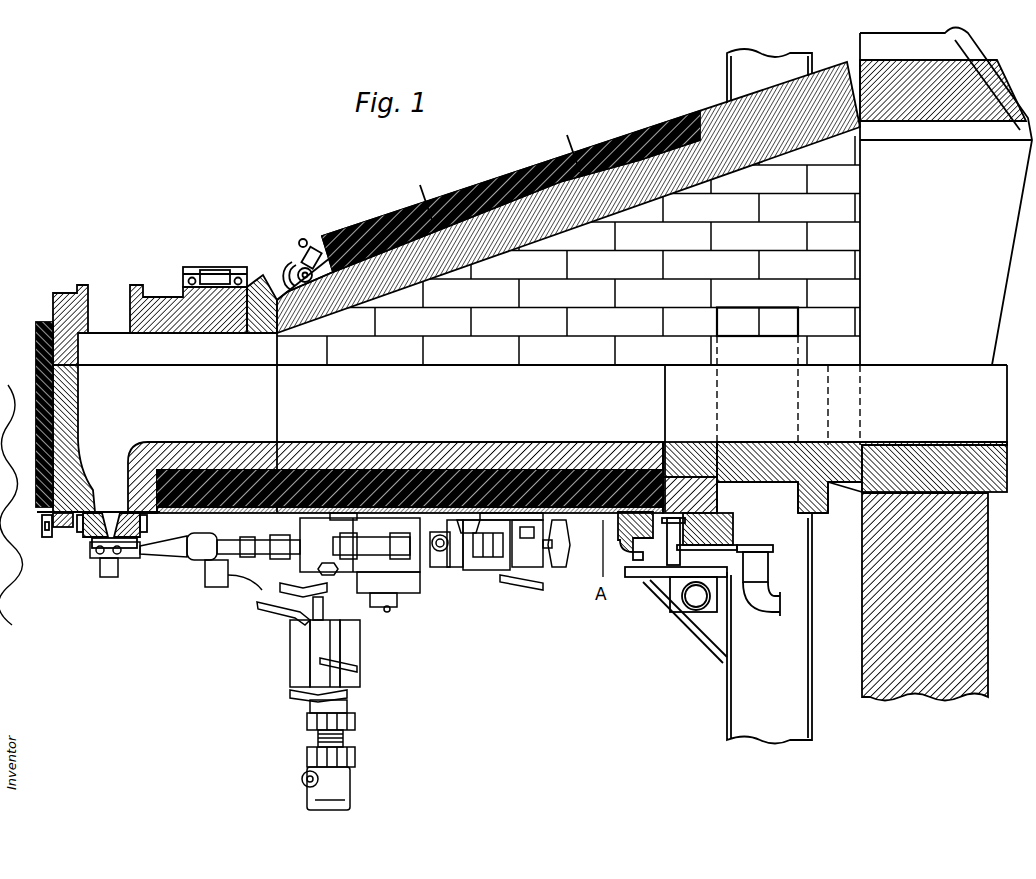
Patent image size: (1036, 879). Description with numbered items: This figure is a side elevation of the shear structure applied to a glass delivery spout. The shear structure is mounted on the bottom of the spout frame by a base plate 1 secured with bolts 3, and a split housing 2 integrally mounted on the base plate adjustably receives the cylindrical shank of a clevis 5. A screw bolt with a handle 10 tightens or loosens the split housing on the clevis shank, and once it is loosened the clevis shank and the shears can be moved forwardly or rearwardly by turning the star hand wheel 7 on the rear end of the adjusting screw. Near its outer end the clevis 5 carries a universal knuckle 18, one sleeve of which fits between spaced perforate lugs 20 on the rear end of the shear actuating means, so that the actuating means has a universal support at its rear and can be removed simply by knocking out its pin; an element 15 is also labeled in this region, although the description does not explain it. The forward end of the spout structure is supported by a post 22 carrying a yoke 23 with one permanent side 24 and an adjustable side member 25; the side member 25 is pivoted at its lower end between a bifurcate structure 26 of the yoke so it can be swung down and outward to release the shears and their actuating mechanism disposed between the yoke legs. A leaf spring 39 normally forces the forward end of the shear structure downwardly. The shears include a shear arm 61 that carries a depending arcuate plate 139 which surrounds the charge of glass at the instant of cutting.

The base plate 1 is at (540, 518).
The split housing 2 is at (536, 560).
The bolts 3 is at (522, 535).
The clevis 5 is at (462, 568).
The star hand wheel 7 is at (561, 556).
The handle 10 is at (517, 580).
The adjusting nut 15 is at (479, 560).
The universal knuckle 18 is at (455, 555).
The perforate lugs 20 is at (437, 560).
The post 22 is at (343, 783).
The yoke 23 is at (353, 652).
The permanent side 24 is at (350, 605).
The side member 25 is at (322, 632).
The bifurcate structure 26 is at (302, 660).
The leaf spring 39 is at (310, 515).
The shear arm 61 is at (173, 546).
The depending arcuate plate 139 is at (110, 570).